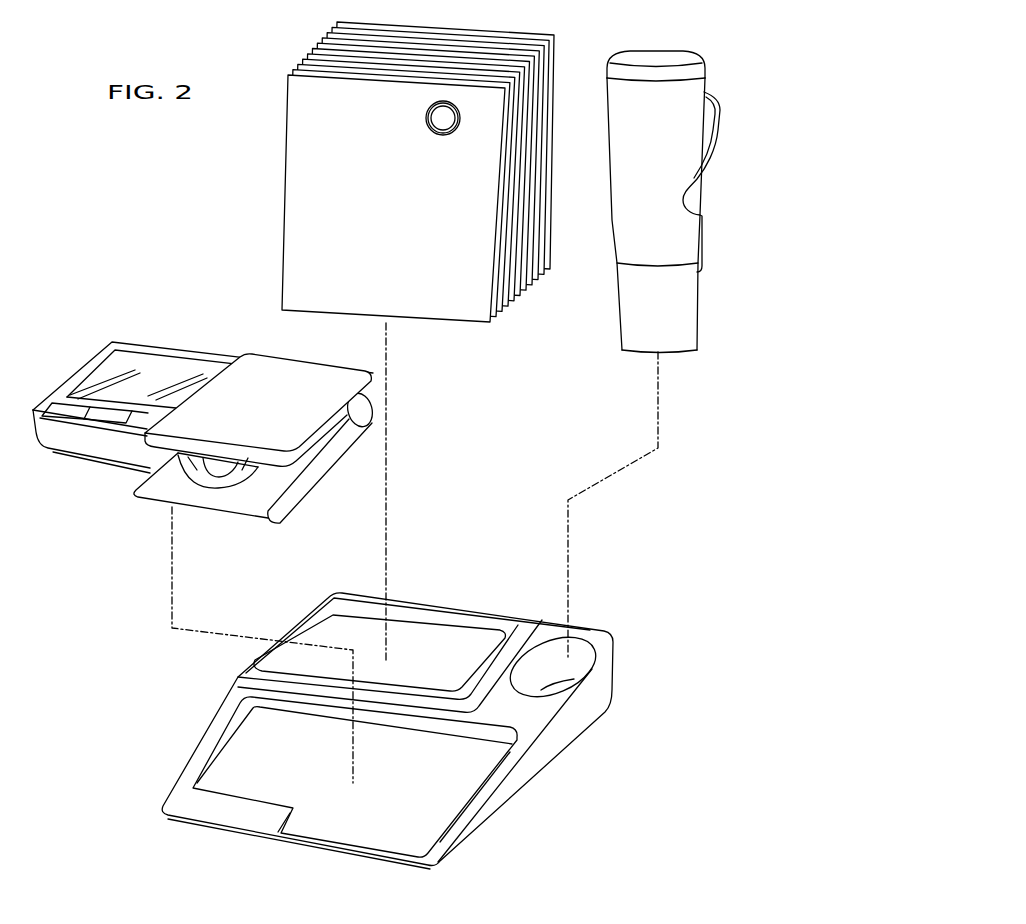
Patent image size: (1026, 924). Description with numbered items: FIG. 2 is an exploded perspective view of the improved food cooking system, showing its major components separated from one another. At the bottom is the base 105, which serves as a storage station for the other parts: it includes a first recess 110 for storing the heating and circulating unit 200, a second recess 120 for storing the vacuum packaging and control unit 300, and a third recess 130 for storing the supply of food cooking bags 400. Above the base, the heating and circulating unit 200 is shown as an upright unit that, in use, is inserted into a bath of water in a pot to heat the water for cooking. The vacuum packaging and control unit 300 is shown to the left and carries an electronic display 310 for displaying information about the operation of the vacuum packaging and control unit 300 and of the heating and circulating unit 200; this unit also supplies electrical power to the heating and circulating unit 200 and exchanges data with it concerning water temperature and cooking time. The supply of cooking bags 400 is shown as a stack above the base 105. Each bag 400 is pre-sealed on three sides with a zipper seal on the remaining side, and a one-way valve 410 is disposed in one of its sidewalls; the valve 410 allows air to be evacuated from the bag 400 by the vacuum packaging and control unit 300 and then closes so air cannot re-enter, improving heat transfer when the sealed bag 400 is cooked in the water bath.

The base 105 is at (616, 647).
The first recess 110 is at (545, 688).
The second recess 120 is at (413, 790).
The third recess 130 is at (447, 665).
The heating and circulating unit 200 is at (612, 218).
The vacuum packaging and control unit 300 is at (260, 493).
The electronic display 310 is at (108, 367).
The food cooking bags 400 is at (373, 216).
The one-way valve 410 is at (426, 117).